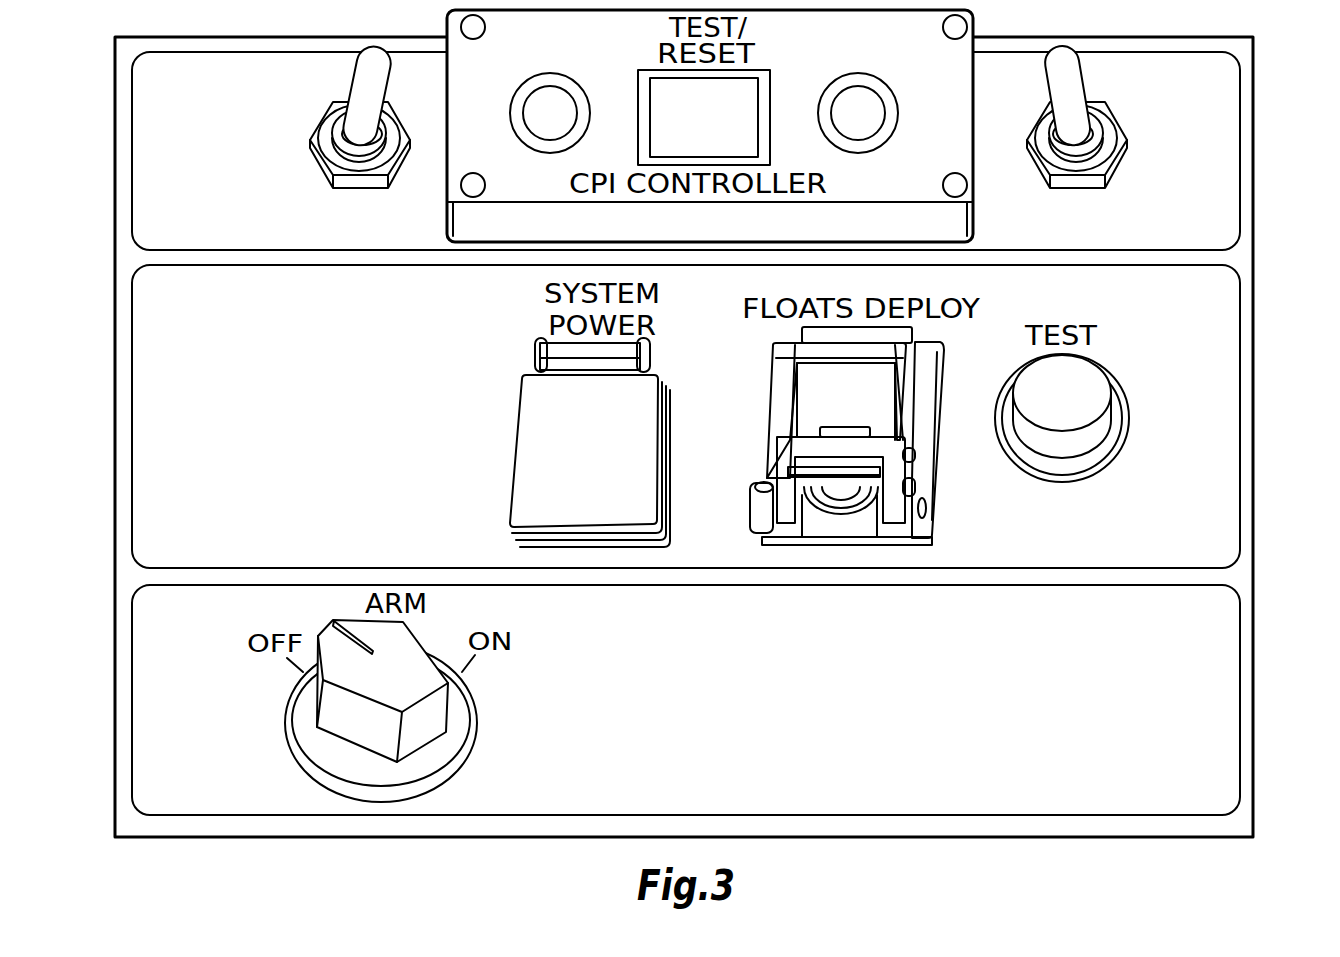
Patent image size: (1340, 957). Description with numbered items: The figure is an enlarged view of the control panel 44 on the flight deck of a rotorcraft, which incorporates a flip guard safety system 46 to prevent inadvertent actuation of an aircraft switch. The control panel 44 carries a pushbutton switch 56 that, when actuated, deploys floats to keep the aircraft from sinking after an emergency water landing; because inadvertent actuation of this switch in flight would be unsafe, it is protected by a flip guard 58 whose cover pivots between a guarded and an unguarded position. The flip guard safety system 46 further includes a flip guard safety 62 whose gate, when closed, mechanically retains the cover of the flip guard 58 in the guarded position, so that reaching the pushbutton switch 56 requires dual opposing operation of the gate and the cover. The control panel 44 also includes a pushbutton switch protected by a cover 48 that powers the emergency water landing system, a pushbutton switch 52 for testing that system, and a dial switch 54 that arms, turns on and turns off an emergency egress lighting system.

The control panel 44 is at (1222, 325).
The flip guard safety system 46 is at (848, 548).
The cover 48 is at (552, 498).
The pushbutton switch 52 is at (1093, 380).
The dial switch 54 is at (425, 733).
The pushbutton switch 56 is at (832, 490).
The flip guard 58 is at (812, 390).
The flip guard safety 62 is at (910, 525).